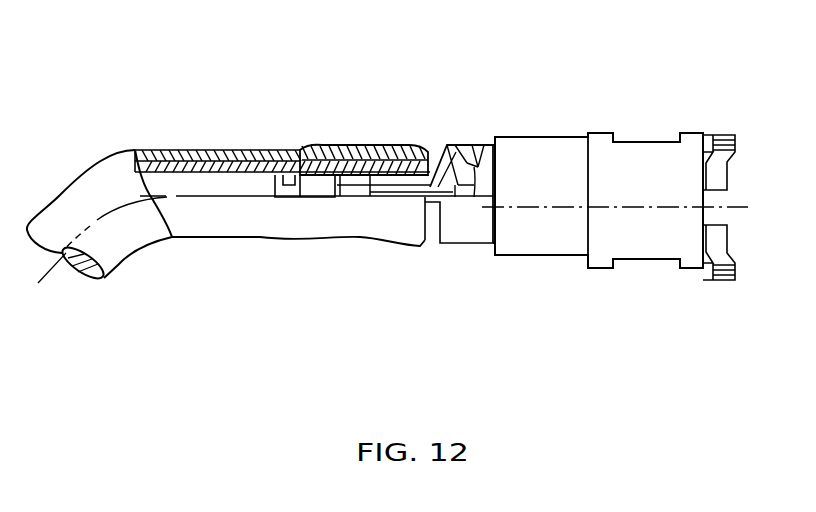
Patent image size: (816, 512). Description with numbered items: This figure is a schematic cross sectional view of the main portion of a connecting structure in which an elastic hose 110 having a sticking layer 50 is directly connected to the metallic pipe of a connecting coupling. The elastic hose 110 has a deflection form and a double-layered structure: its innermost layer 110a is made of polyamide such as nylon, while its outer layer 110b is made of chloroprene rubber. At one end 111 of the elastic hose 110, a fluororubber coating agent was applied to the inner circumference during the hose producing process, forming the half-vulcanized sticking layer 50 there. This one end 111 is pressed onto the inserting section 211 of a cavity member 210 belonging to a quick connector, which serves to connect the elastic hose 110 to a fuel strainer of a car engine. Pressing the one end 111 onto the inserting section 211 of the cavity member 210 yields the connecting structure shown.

The elastic hose 110 is at (157, 148).
The innermost layer 110a is at (355, 150).
The outer layer 110b is at (313, 150).
The one end 111 is at (414, 150).
The sticking layer 50 is at (328, 180).
The cavity member 210 is at (642, 133).
The inserting section 211 is at (390, 198).